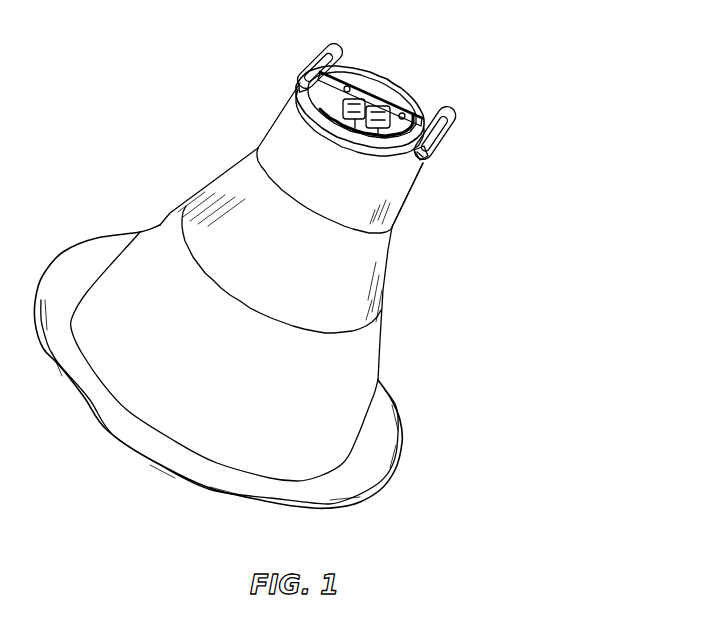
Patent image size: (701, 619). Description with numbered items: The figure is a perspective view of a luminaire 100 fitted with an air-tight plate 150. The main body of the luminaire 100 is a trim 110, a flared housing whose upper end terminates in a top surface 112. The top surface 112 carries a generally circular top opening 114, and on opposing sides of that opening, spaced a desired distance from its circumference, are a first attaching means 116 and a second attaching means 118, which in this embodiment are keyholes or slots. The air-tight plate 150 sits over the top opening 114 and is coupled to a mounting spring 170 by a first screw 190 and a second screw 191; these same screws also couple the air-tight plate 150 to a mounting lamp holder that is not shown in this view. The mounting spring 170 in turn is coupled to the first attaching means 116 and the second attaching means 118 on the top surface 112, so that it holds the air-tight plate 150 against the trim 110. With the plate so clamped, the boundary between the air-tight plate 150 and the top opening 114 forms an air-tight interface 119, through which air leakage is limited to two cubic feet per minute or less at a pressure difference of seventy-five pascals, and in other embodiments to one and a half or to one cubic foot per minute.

The luminaire 100 is at (494, 72).
The trim 110 is at (368, 369).
The top surface 112 is at (307, 100).
The top opening 114 is at (400, 160).
The first attaching means 116 is at (297, 85).
The second attaching means 118 is at (420, 153).
The air-tight interface 119 is at (358, 150).
The air-tight plate 150 is at (330, 113).
The mounting spring 170 is at (448, 123).
The first screw 190 is at (361, 68).
The second screw 191 is at (403, 114).